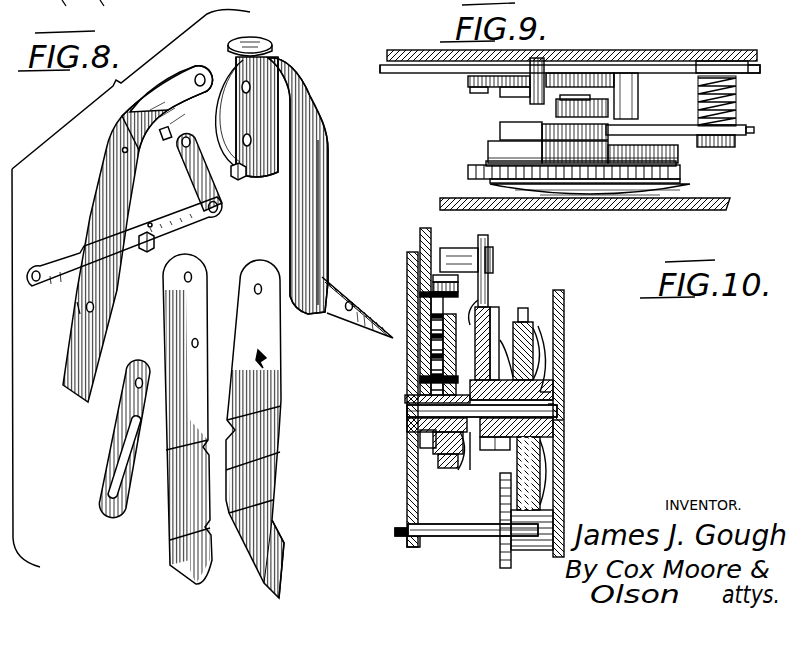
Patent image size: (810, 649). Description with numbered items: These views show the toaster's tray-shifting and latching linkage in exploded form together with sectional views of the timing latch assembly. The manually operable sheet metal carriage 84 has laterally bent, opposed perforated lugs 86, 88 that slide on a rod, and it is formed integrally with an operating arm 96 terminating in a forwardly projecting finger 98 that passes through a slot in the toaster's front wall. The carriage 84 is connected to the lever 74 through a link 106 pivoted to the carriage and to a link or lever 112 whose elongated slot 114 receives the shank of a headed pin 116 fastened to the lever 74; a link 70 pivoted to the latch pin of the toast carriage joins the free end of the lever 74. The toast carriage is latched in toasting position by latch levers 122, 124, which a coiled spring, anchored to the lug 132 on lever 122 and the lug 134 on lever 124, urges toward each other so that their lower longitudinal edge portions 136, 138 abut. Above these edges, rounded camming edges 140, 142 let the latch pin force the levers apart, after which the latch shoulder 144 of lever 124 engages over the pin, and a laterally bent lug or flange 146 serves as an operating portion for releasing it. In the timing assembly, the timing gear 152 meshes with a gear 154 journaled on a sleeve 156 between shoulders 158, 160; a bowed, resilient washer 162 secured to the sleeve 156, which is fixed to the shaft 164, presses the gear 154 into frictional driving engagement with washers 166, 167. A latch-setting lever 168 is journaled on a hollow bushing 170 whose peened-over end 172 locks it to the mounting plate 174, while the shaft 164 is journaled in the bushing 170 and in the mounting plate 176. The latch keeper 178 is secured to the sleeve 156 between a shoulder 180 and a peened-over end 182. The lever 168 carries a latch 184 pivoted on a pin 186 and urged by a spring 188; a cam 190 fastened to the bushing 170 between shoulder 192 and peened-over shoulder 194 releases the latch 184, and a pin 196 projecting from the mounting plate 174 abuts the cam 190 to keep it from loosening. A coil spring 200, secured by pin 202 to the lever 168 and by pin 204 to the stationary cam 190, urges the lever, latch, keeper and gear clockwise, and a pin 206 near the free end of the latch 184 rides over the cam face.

In FIG. 8, the link 70 is at (190, 170).
In FIG. 8, the lever 74 is at (188, 224).
In FIG. 8, the sheet metal carriage 84 is at (258, 92).
In FIG. 8, the perforated lug 86 is at (240, 181).
In FIG. 8, the perforated lug 88 is at (259, 43).
In FIG. 8, the operating arm 96 is at (312, 197).
In FIG. 8, the finger 98 is at (335, 291).
In FIG. 8, the link 106 is at (104, 196).
In FIG. 8, the link or lever 112 is at (125, 402).
In FIG. 8, the elongated slot 114 is at (118, 464).
In FIG. 8, the headed pin 116 is at (140, 252).
In FIG. 8, the latch lever 122 is at (176, 498).
In FIG. 8, the latch lever 124 is at (262, 476).
In FIG. 8, the lug 132 is at (192, 276).
In FIG. 8, the lug 134 is at (266, 354).
In FIG. 8, the lower longitudinal edge portion 136 is at (195, 537).
In FIG. 8, the lower longitudinal edge portion 138 is at (229, 470).
In FIG. 8, the rounded camming edge 140 is at (185, 448).
In FIG. 8, the rounded camming edge 142 is at (274, 422).
In FIG. 8, the latch shoulder 144 is at (233, 513).
In FIG. 8, the laterally bent lug or flange 146 is at (277, 556).
In FIG. 10, the timing gear 152 is at (553, 510).
In FIG. 9, the gear 154 is at (468, 172).
In FIG. 10, the gear 154 is at (553, 458).
In FIG. 9, the sleeve 156 is at (548, 151).
In FIG. 10, the sleeve 156 is at (548, 350).
In FIG. 10, the shoulder 158 is at (548, 370).
In FIG. 9, the shoulder 160 is at (556, 113).
In FIG. 10, the shoulder 160 is at (552, 385).
In FIG. 9, the bowed, resilient washer 162 is at (650, 192).
In FIG. 10, the bowed, resilient washer 162 is at (552, 328).
In FIG. 10, the shaft 164 is at (555, 402).
In FIG. 9, the washer 166 is at (490, 164).
In FIG. 10, the washer 166 is at (520, 320).
In FIG. 9, the washer 167 is at (495, 183).
In FIG. 10, the washer 167 is at (538, 335).
In FIG. 9, the latch-setting lever 168 is at (396, 73).
In FIG. 10, the latch-setting lever 168 is at (433, 350).
In FIG. 10, the hollow bushing 170 is at (438, 426).
In FIG. 10, the peened-over end 172 is at (443, 386).
In FIG. 9, the mounting plate 174 is at (628, 64).
In FIG. 10, the mounting plate 174 is at (440, 443).
In FIG. 9, the mounting plate 176 is at (644, 201).
In FIG. 10, the mounting plate 176 is at (556, 422).
In FIG. 9, the latch keeper 178 is at (500, 130).
In FIG. 10, the latch keeper 178 is at (490, 330).
In FIG. 10, the shoulder 180 is at (491, 454).
In FIG. 10, the peened-over end 182 is at (487, 467).
In FIG. 9, the latch 184 is at (662, 125).
In FIG. 10, the latch 184 is at (490, 275).
In FIG. 9, the pin 186 is at (737, 105).
In FIG. 9, the spring 188 is at (725, 75).
In FIG. 9, the cam 190 is at (588, 87).
In FIG. 10, the cam 190 is at (425, 330).
In FIG. 10, the shoulder 192 is at (433, 408).
In FIG. 10, the peened-over shoulder 194 is at (455, 480).
In FIG. 9, the pin 196 is at (560, 60).
In FIG. 10, the pin 196 is at (456, 250).
In FIG. 9, the coil spring 200 is at (500, 84).
In FIG. 9, the pin 202 is at (468, 91).
In FIG. 10, the pin 204 is at (440, 470).
In FIG. 9, the pin 206 is at (640, 92).
In FIG. 10, the pin 206 is at (458, 248).